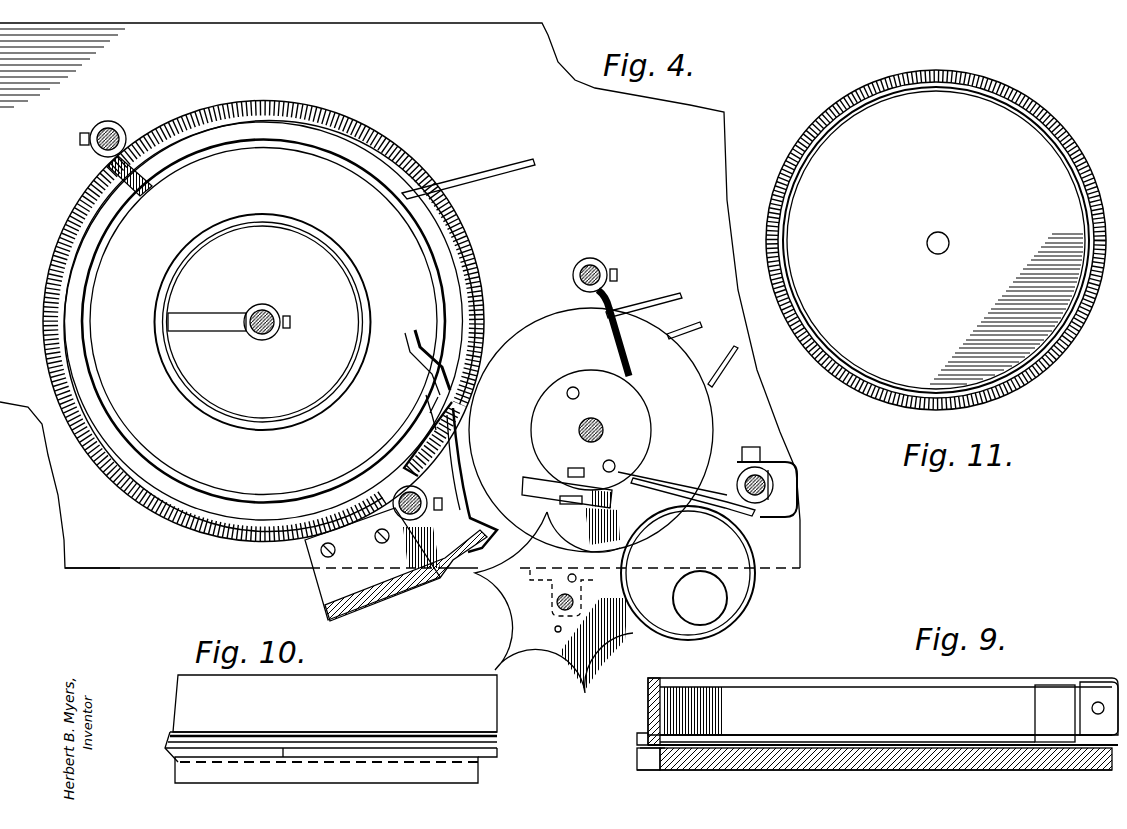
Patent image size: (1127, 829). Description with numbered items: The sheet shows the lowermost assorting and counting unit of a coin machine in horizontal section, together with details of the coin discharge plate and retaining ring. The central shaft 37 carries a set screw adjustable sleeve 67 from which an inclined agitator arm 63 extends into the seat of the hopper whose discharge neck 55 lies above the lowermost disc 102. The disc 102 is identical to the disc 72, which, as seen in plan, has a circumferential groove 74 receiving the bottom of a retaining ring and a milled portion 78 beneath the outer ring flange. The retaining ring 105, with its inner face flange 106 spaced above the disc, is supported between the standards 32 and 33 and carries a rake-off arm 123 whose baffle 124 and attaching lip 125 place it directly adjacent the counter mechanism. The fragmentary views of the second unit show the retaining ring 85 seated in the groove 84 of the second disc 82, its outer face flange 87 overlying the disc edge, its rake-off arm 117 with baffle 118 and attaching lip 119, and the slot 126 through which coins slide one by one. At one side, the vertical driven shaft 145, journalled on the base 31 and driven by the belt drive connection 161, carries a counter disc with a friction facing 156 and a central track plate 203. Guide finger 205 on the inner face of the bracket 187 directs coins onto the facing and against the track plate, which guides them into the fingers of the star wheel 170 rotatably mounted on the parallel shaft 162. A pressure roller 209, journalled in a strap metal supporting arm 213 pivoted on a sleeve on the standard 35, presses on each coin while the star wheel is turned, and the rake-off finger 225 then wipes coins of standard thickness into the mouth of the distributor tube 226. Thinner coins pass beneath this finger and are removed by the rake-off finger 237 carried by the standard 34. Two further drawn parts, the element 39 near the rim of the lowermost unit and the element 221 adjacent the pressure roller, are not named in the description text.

In FIG. 4, the base 31 is at (95, 566).
In FIG. 4, the standard 32 is at (122, 128).
In FIG. 4, the standard 33 is at (416, 512).
In FIG. 4, the standard 34 is at (600, 272).
In FIG. 4, the standard 35 is at (780, 495).
In FIG. 4, the shaft 37 is at (252, 334).
In FIG. 4, the pointer 39 is at (500, 173).
In FIG. 4, the discharge neck 55 is at (266, 224).
In FIG. 4, the agitator arm 63 is at (200, 316).
In FIG. 4, the sleeve 67 is at (278, 309).
In FIG. 11, the disc 72 is at (955, 96).
In FIG. 11, the circumferential groove 74 is at (1045, 118).
In FIG. 11, the milled portion 78 is at (812, 128).
In FIG. 10, the second disc 82 is at (462, 778).
In FIG. 9, the second disc 82 is at (812, 768).
In FIG. 9, the groove 84 is at (655, 770).
In FIG. 10, the retaining ring 85 is at (182, 686).
In FIG. 9, the retaining ring 85 is at (818, 672).
In FIG. 10, the outer face flange 87 is at (287, 742).
In FIG. 9, the outer face flange 87 is at (636, 738).
In FIG. 4, the lowermost disc 102 is at (162, 500).
In FIG. 4, the retaining ring 105 is at (95, 460).
In FIG. 4, the inner face flange 106 is at (118, 428).
In FIG. 9, the rake-off arm 117 is at (850, 686).
In FIG. 9, the baffle 118 is at (1052, 688).
In FIG. 9, the attaching lip 119 is at (1094, 690).
In FIG. 4, the rake-off arm 123 is at (352, 180).
In FIG. 4, the baffle 124 is at (418, 358).
In FIG. 4, the attaching lip 125 is at (430, 412).
In FIG. 10, the slot 126 is at (388, 748).
In FIG. 4, the driven shaft 145 is at (610, 414).
In FIG. 4, the friction facing 156 is at (708, 430).
In FIG. 4, the belt drive connection 161 is at (736, 346).
In FIG. 4, the shaft 162 is at (558, 610).
In FIG. 4, the star wheel 170 is at (530, 606).
In FIG. 4, the bracket 187 is at (432, 580).
In FIG. 4, the track plate 203 is at (625, 390).
In FIG. 4, the guide finger 205 is at (448, 452).
In FIG. 4, the pressure roller 209 is at (650, 500).
In FIG. 4, the supporting arm 213 is at (660, 500).
In FIG. 4, the roller 221 is at (712, 520).
In FIG. 4, the rake-off finger 225 is at (665, 478).
In FIG. 4, the distributor tube 226 is at (728, 602).
In FIG. 4, the rake-off finger 237 is at (616, 304).